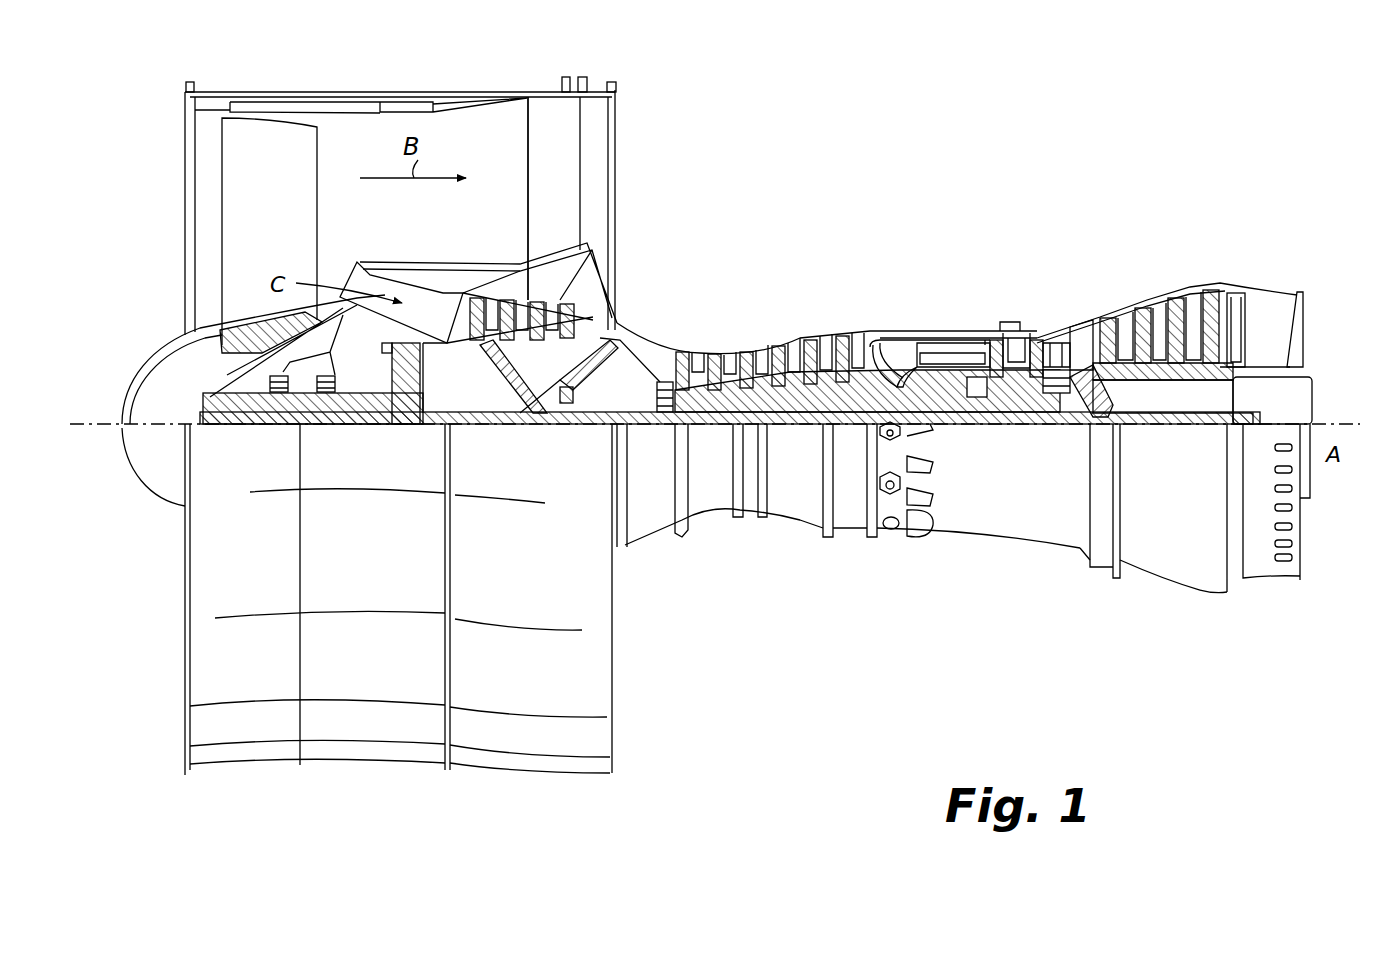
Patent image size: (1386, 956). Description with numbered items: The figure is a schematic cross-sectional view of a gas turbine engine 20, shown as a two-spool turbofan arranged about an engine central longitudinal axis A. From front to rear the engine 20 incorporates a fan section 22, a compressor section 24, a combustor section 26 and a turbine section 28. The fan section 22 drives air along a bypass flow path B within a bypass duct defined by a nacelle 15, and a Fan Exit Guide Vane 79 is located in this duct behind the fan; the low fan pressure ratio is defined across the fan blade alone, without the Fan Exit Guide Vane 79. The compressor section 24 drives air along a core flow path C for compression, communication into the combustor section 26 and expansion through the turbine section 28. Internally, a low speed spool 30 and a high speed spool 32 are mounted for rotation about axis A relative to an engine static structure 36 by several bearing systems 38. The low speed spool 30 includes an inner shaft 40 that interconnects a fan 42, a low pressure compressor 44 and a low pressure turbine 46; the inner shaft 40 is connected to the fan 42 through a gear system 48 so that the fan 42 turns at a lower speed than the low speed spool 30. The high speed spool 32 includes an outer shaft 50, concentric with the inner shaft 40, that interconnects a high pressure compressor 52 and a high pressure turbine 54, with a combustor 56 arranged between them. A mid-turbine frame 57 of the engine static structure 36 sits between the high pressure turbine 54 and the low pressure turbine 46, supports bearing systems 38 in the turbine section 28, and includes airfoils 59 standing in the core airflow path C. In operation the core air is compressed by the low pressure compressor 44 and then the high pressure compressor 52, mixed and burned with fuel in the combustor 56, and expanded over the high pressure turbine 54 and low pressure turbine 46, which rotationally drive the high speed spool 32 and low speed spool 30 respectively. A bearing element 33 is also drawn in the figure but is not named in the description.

The nacelle 15 is at (410, 92).
The gas turbine engine 20 is at (1030, 140).
The fan section 22 is at (288, 92).
The compressor section 24 is at (638, 322).
The combustor section 26 is at (905, 330).
The turbine section 28 is at (1145, 298).
The low speed spool 30 is at (793, 433).
The high speed spool 32 is at (822, 385).
The bearing system 33 is at (1068, 430).
The engine static structure 36 is at (842, 536).
The bearing systems 38 is at (565, 414).
The inner shaft 40 is at (637, 430).
The fan 42 is at (398, 446).
The low pressure compressor 44 is at (515, 268).
The low pressure turbine 46 is at (1160, 290).
The gear system 48 is at (400, 412).
The outer shaft 50 is at (950, 428).
The high pressure compressor 52 is at (742, 345).
The high pressure turbine 54 is at (1010, 333).
The combustor 56 is at (935, 360).
The mid-turbine frame 57 is at (1077, 330).
The airfoils 59 is at (1057, 350).
The Fan Exit Guide Vane 79 is at (572, 138).